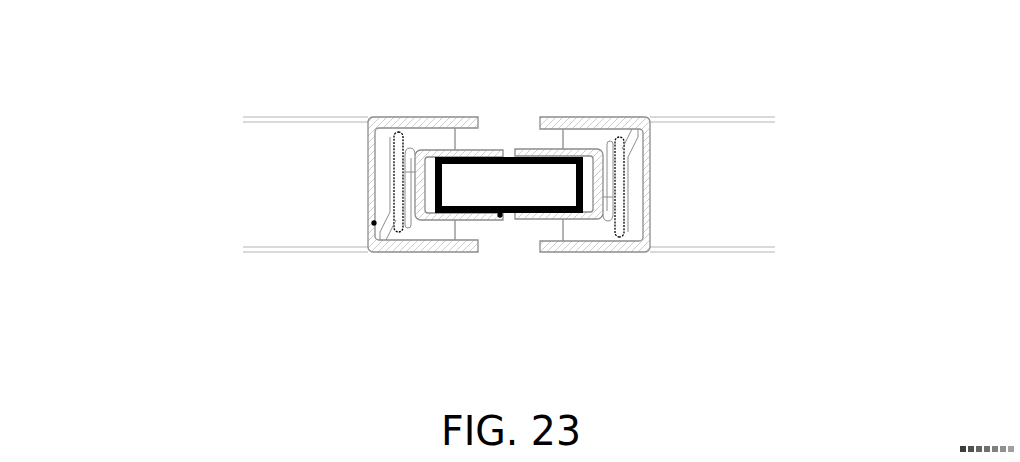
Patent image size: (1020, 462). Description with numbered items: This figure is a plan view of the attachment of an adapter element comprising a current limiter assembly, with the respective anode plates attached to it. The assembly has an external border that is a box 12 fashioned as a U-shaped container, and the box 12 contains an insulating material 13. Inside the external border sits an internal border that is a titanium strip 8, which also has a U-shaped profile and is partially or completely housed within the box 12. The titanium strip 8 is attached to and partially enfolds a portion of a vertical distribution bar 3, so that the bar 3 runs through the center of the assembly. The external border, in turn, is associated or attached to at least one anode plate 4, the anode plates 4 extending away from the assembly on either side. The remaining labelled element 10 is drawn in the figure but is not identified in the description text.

The vertical distribution bar 3 is at (502, 177).
The anode plate 4 is at (295, 252).
The titanium strip 8 is at (500, 215).
The sealing gasket 10 is at (397, 229).
The box 12 is at (374, 223).
The insulating material 13 is at (428, 142).